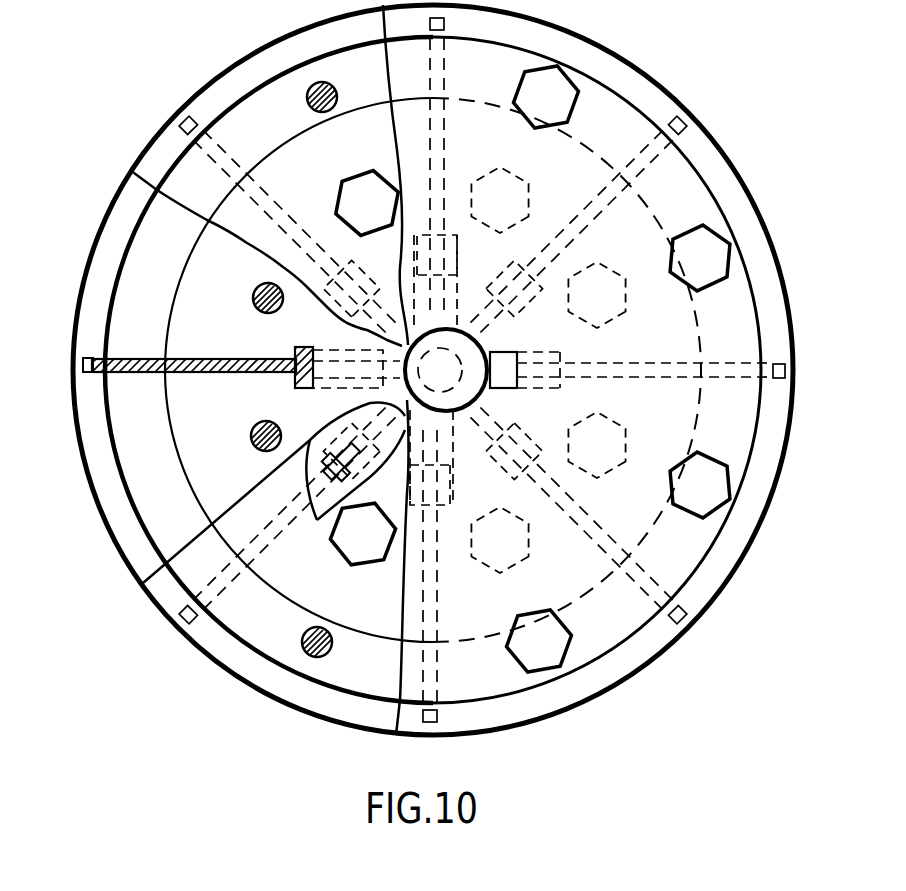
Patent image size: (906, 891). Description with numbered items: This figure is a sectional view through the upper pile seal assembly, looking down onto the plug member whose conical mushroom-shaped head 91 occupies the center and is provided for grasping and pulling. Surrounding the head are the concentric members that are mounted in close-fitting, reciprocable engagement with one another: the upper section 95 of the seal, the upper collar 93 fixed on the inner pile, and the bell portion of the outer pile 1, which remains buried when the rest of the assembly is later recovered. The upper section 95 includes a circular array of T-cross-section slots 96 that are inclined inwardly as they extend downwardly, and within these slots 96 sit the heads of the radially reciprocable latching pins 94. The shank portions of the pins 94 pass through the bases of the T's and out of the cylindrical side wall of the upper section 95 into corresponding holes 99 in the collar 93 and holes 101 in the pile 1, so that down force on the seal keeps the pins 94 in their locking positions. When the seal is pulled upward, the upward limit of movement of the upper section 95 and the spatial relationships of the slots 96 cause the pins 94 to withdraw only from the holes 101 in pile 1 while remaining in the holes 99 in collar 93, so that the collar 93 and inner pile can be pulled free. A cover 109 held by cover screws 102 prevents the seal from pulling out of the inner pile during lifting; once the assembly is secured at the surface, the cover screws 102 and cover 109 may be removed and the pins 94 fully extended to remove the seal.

The pile 1 is at (692, 126).
The conical mushroom-shaped head 91 is at (483, 400).
The upper collar 93 is at (130, 237).
The latching pins 94 is at (170, 312).
The upper section 95 is at (222, 463).
The T-cross-section slots 96 is at (317, 520).
The holes 99 is at (122, 360).
The holes 101 is at (86, 376).
The cover screws 102 is at (733, 253).
The cover 109 is at (690, 190).